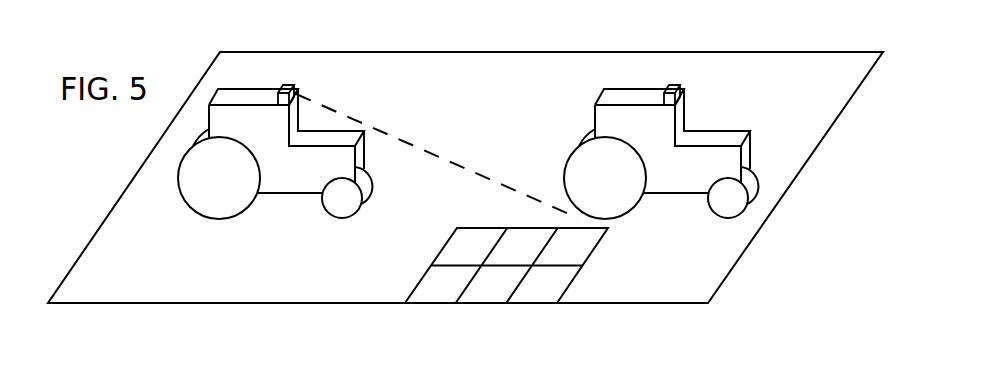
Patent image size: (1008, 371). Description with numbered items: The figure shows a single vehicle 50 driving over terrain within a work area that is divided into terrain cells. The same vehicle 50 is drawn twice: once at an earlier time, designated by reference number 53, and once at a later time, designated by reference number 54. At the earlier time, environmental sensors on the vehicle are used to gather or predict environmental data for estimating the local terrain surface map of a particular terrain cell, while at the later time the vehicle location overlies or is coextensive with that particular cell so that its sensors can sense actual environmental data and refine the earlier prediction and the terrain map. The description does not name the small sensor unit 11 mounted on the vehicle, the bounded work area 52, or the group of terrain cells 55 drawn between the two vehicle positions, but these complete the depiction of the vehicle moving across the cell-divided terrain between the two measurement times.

The vehicle 50 is at (252, 100).
The position sensor / GPS receiver 11 is at (290, 82).
The field 52 is at (787, 77).
The earlier time (T) position 53 is at (245, 268).
The later time (T+N) position 54 is at (667, 267).
The grid cells / area of interest 55 is at (592, 223).